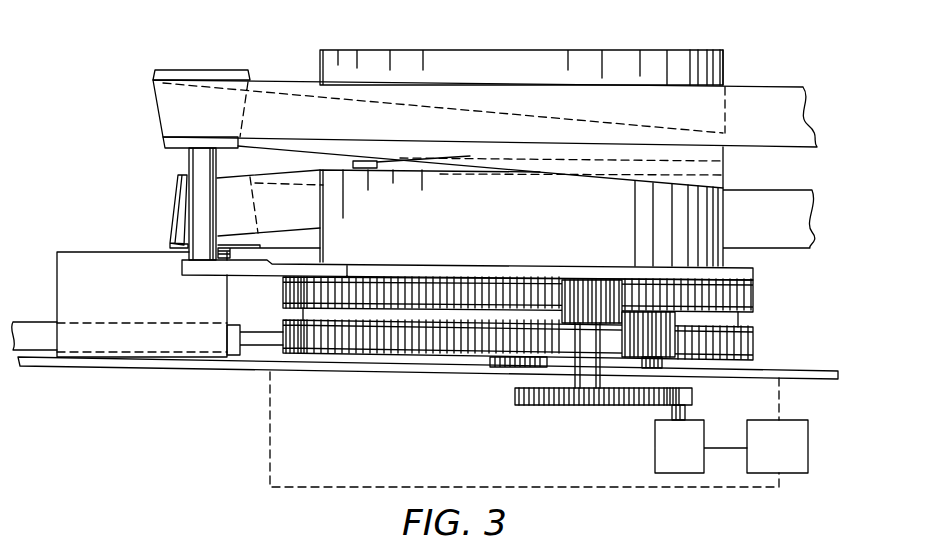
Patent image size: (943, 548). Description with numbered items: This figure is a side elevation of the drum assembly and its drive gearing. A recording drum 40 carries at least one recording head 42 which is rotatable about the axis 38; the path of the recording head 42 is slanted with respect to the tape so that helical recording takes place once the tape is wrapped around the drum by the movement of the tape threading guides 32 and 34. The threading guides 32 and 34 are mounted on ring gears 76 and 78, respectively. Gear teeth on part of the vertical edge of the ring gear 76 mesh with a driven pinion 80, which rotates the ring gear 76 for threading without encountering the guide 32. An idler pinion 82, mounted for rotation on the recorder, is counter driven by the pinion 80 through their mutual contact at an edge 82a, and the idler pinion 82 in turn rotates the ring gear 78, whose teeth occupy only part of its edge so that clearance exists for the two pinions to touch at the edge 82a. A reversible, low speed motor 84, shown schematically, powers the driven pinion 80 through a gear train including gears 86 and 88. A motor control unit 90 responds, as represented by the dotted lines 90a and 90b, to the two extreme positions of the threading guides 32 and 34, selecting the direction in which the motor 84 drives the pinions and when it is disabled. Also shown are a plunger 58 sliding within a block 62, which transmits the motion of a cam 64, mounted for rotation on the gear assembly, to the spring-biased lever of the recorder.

The tape threading guide 32 is at (224, 70).
The tape threading guide 34 is at (178, 197).
The axis 38 is at (523, 10).
The recording drum 40 is at (727, 63).
The recording head 42 is at (370, 170).
The plunger 58 is at (32, 322).
The block 62 is at (57, 262).
The cam 64 is at (260, 348).
The ring gear 76 is at (282, 264).
The ring gear 78 is at (755, 313).
The driven pinion 80 is at (572, 283).
The idler pinion 82 is at (666, 358).
The edge 82a is at (620, 313).
The motor 84 is at (655, 462).
The gear 86 is at (585, 405).
The gear 88 is at (690, 406).
The motor control unit 90 is at (808, 466).
The dotted line 90a is at (781, 401).
The dotted line 90b is at (272, 435).